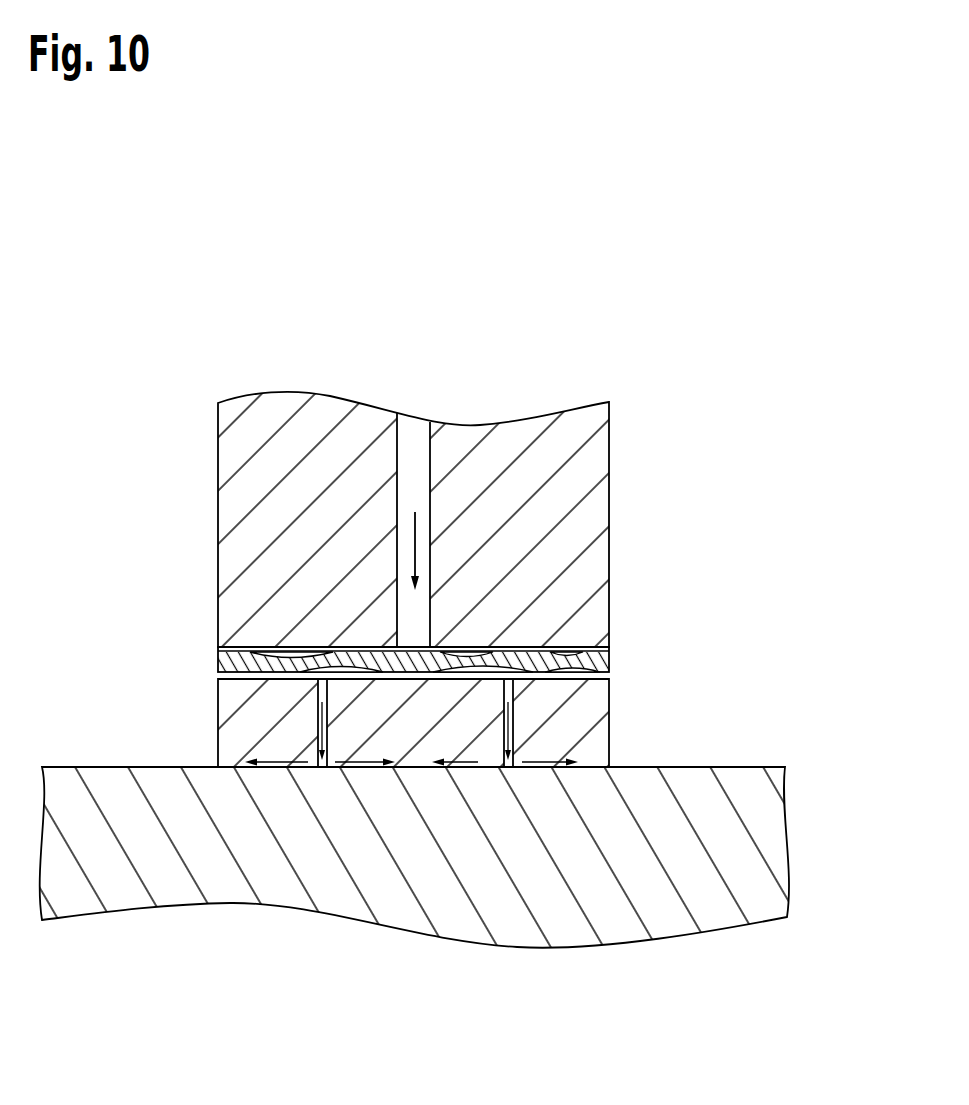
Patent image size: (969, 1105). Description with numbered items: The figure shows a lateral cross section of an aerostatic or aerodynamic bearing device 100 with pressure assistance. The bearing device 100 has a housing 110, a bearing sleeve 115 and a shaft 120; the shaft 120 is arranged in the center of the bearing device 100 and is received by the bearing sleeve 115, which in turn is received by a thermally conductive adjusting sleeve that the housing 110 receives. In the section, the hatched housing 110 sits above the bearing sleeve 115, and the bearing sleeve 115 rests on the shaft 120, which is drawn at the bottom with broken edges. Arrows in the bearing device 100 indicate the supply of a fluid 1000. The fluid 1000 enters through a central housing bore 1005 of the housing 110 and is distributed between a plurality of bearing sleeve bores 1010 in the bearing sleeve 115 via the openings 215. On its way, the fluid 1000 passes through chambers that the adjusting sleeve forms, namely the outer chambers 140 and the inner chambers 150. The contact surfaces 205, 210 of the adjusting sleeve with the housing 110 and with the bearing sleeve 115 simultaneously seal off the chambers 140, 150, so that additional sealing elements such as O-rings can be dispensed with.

The bearing device 100 is at (171, 330).
The housing 110 is at (597, 517).
The bearing sleeve 115 is at (595, 740).
The shaft 120 is at (690, 912).
The outer chambers 140 is at (417, 640).
The inner chambers 150 is at (452, 698).
The contact surface 205 is at (594, 641).
The contact surface 210 is at (545, 683).
The openings 215 is at (349, 648).
The fluid 1000 is at (397, 543).
The central housing bore 1005 is at (430, 455).
The bearing sleeve bores 1010 is at (317, 713).